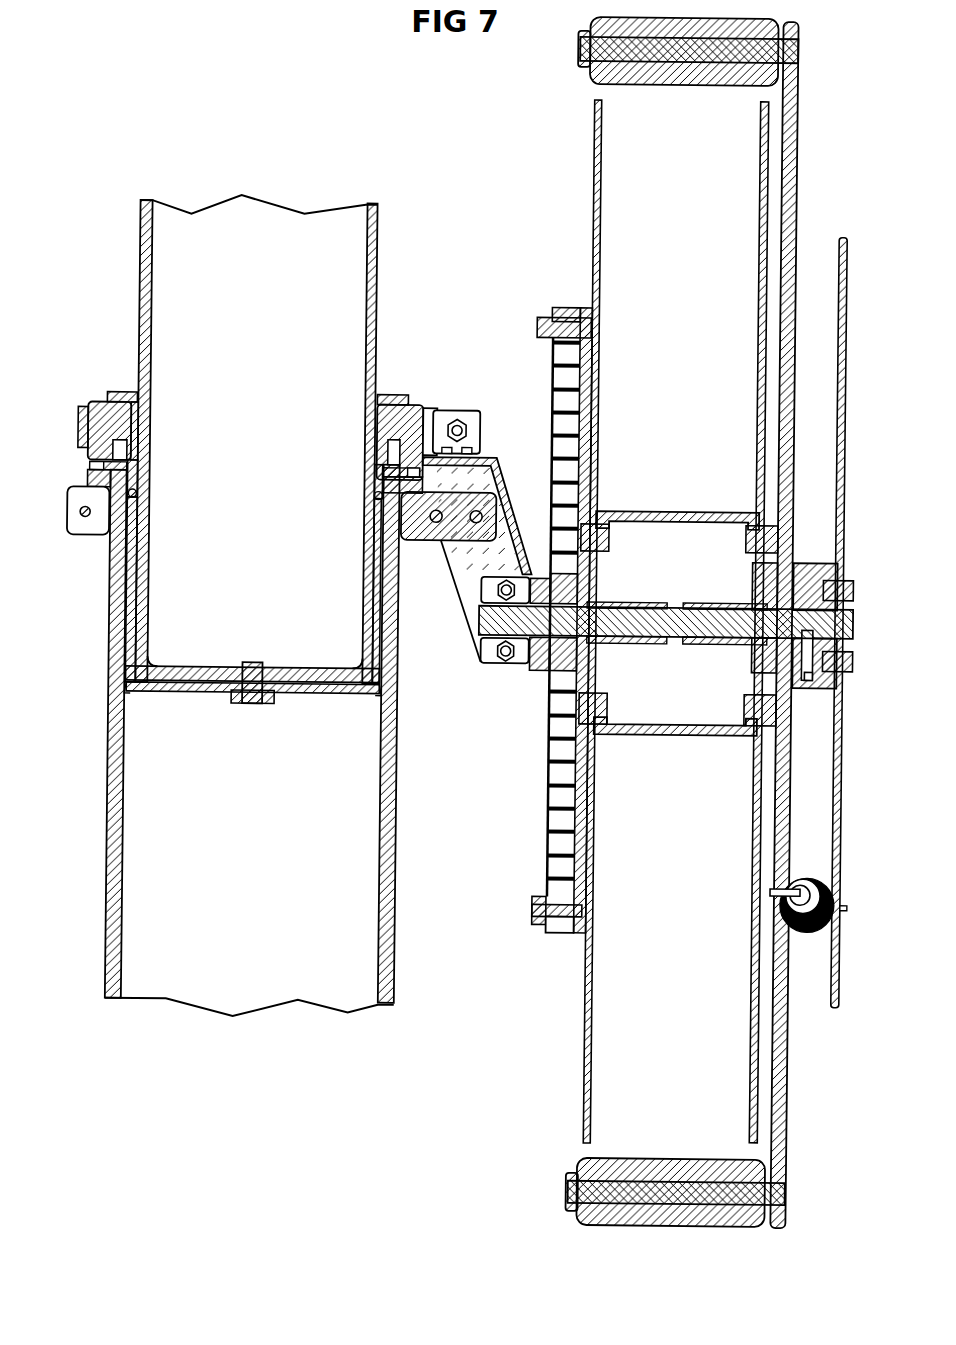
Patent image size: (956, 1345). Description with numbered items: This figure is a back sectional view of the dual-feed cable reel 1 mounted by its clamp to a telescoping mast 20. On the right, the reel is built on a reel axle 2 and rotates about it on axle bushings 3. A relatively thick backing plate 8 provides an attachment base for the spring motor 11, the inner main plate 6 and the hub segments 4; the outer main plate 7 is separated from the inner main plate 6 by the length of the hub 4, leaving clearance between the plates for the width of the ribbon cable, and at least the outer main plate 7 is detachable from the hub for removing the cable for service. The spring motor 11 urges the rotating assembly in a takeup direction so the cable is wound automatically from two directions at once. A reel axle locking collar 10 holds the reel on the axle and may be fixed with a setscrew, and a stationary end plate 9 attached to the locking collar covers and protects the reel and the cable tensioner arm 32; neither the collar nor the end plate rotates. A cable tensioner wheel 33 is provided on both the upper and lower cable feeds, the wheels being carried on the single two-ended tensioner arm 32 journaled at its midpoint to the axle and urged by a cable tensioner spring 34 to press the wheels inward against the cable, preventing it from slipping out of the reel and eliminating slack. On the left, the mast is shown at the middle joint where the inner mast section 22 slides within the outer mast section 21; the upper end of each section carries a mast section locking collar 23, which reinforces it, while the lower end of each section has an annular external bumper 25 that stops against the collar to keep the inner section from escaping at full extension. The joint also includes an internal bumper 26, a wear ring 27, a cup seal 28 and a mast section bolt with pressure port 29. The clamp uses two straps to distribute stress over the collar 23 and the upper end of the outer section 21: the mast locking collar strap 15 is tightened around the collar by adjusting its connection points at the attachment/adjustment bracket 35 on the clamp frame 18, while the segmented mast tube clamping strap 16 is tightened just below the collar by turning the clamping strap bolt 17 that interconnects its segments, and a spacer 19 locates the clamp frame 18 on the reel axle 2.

The dual-feed cable reel 1 is at (539, 148).
The reel axle 2 is at (853, 616).
The axle bushing 3 is at (708, 600).
The hub segment 4 is at (698, 508).
The inner main plate of reel 6 is at (589, 216).
The outer main plate of reel 7 is at (757, 225).
The backing plate 8 is at (584, 307).
The end plate 9 is at (840, 401).
The reel axle locking collar 10 is at (805, 560).
The spring motor 11 is at (563, 442).
The mast locking collar strap 15 is at (76, 442).
The mast tube clamping strap 16 is at (90, 543).
The mast tube clamping strap bolt 17 is at (79, 519).
The clamp frame 18 is at (505, 500).
The spacer 19 is at (546, 652).
The telescoping mast 20 is at (415, 845).
The outer mast section at middle joint of mast 21 is at (386, 930).
The inner mast section at middle joint of mast 22 is at (362, 312).
The mast section locking collar 23 is at (98, 409).
The mast section external bumper 25 is at (119, 398).
The mast section internal bumper 26 is at (372, 499).
The mast section wear ring 27 is at (138, 429).
The mast section cup seal 28 is at (378, 697).
The mast section bolt with pressure port 29 is at (250, 665).
The cable tensioner arm 32 is at (793, 1087).
The cable tensioner wheel 33 is at (684, 78).
The cable tensioner spring 34 is at (824, 882).
The mast locking collar strap attachment/adjustment bracket 35 is at (462, 418).